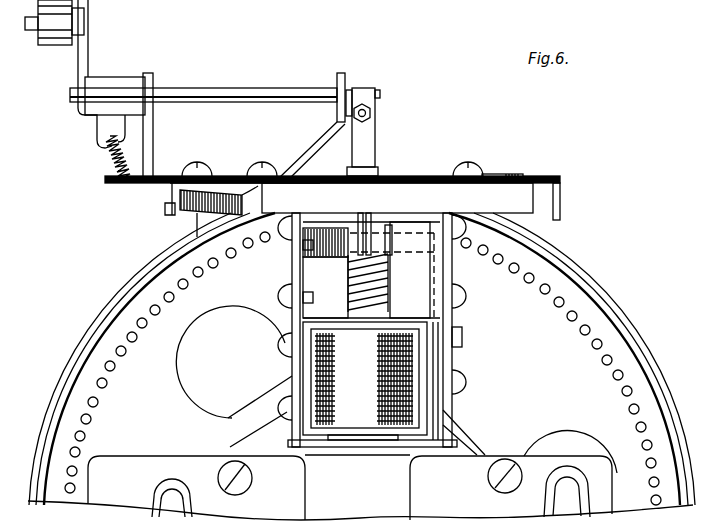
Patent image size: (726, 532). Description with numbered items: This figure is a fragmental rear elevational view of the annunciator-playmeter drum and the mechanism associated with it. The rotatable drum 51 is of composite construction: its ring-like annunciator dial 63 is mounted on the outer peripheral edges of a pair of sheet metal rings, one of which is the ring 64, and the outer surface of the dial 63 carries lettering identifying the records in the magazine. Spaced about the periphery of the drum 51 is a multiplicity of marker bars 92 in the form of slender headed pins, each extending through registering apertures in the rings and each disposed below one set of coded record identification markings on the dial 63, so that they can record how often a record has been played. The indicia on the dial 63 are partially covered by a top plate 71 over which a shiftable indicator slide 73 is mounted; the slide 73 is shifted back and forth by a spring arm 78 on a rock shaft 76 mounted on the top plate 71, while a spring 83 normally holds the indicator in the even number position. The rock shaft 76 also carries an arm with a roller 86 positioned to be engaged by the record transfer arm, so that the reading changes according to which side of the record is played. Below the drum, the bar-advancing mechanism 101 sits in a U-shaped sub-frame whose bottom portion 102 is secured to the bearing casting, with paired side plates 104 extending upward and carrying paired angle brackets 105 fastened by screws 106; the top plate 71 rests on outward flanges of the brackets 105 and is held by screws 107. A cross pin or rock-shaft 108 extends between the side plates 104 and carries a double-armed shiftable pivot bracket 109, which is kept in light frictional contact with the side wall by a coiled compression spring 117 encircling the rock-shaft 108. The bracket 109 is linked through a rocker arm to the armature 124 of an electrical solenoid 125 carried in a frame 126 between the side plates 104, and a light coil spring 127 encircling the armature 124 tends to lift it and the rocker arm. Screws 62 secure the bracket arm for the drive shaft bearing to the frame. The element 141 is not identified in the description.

The rotatable drum 51 is at (361, 366).
The screws 62 is at (241, 489).
The annunciator dial 63 is at (560, 252).
The sheet metal ring 64 is at (152, 373).
The top plate 71 is at (561, 184).
The indicator slide 73 is at (427, 176).
The rock shaft 76 is at (246, 96).
The spring arm 78 is at (366, 147).
The spring 83 is at (108, 163).
The roller 86 is at (53, 44).
The marker bars 92 is at (622, 373).
The bar-advancing mechanism 101 is at (476, 376).
The bottom portion 102 is at (418, 448).
The side plates 104 is at (300, 352).
The angle brackets 105 is at (453, 268).
The screws 106 is at (278, 294).
The screws 107 is at (270, 167).
The rock-shaft 108 is at (270, 254).
The shiftable pivot bracket 109 is at (427, 285).
The coiled compression spring 117 is at (325, 227).
The armature 124 is at (377, 220).
The electrical solenoid 125 is at (366, 381).
The frame 126 is at (428, 362).
The light coil spring 127 is at (345, 286).
The contact strip 141 is at (517, 176).